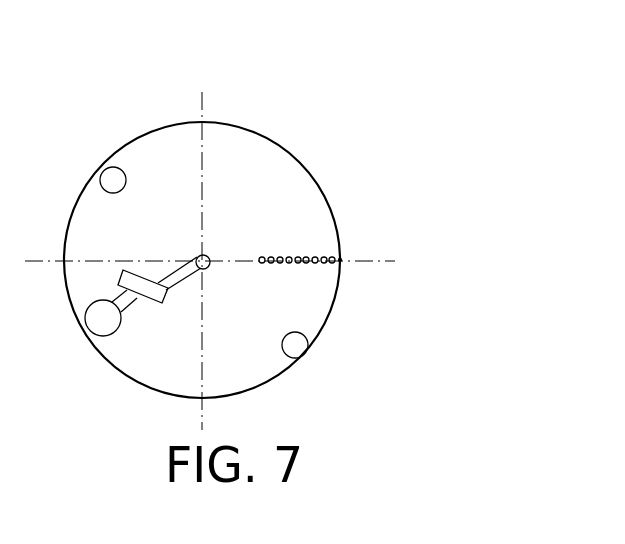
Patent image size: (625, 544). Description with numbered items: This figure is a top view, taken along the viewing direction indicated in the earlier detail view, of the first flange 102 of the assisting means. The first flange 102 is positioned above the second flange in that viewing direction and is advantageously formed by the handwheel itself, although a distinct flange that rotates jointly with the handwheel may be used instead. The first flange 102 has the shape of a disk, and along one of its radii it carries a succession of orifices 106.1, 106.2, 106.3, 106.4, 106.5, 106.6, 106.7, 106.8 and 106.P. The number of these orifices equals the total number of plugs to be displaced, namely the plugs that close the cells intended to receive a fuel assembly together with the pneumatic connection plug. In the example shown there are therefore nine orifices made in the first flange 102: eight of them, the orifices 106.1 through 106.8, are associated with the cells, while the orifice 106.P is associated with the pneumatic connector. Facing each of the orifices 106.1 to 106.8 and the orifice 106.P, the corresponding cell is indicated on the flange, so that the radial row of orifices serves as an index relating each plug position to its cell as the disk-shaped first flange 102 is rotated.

The first flange 102 is at (296, 144).
The orifice 106.1 is at (343, 257).
The orifice 106.2 is at (318, 257).
The orifice 106.3 is at (317, 263).
The orifice 106.4 is at (300, 257).
The orifice 106.5 is at (297, 263).
The orifice 106.6 is at (274, 257).
The orifice 106.7 is at (270, 263).
The orifice 106.8 is at (263, 263).
The orifice 106.P is at (333, 263).